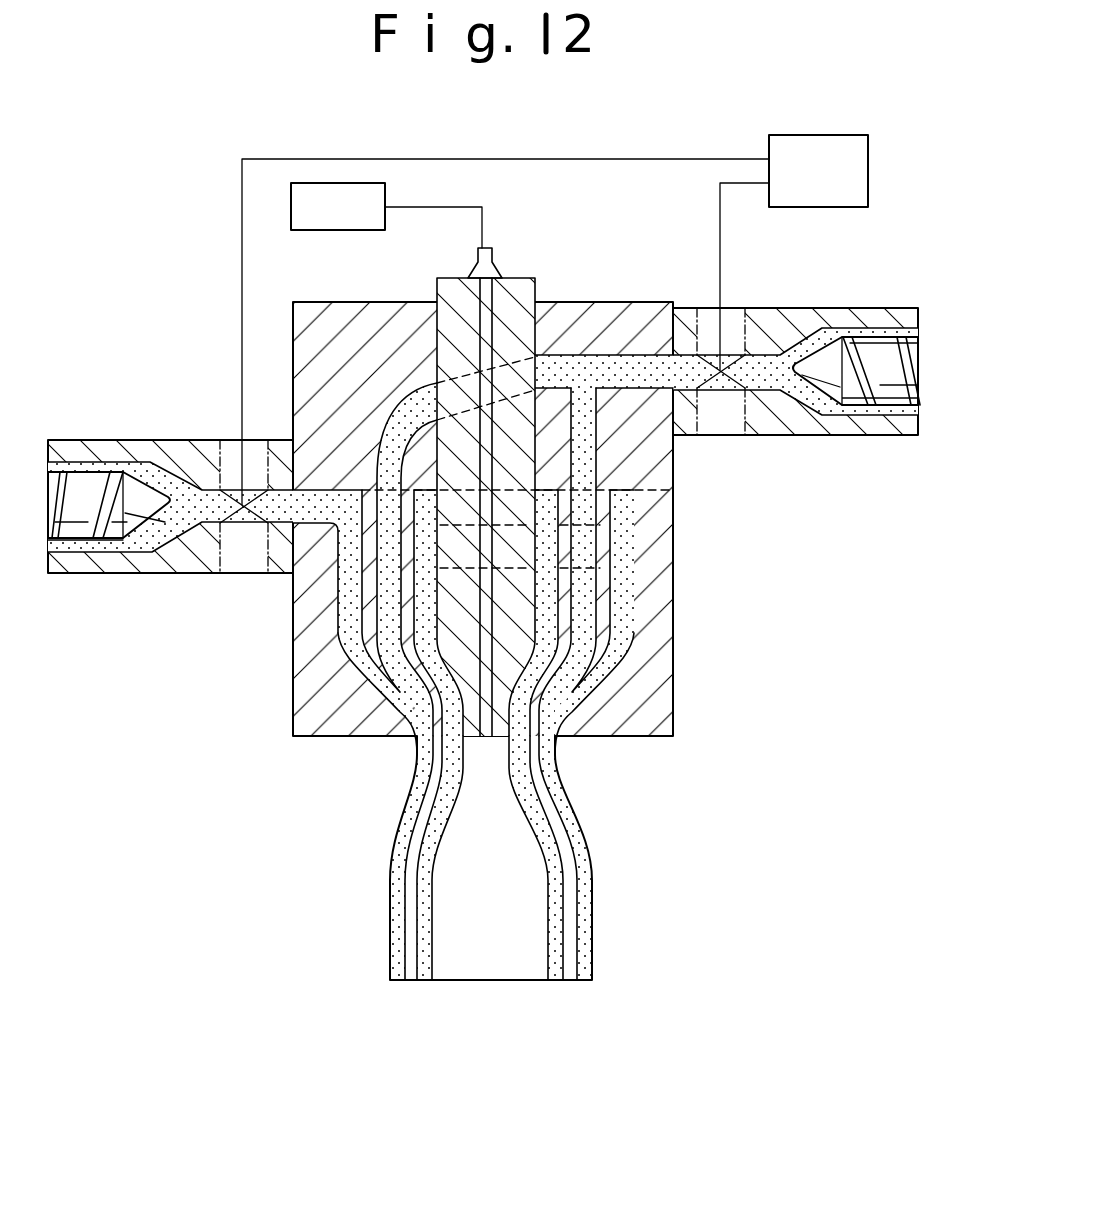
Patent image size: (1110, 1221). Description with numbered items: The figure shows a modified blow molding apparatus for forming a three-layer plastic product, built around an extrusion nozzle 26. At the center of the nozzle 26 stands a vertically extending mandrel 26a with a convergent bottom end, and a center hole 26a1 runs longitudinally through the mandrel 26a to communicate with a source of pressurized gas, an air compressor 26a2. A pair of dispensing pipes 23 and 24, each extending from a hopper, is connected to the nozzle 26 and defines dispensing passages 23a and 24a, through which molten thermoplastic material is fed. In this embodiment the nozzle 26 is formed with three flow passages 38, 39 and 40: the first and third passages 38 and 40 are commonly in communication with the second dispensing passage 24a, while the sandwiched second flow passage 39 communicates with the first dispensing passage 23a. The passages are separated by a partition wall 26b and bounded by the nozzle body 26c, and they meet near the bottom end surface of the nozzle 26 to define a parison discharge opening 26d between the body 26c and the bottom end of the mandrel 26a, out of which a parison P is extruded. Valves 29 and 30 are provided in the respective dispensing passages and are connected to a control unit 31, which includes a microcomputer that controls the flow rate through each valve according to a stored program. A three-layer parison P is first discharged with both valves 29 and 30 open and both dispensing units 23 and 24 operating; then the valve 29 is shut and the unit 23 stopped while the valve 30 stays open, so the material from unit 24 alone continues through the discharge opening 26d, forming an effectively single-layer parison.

The extrusion nozzle 26 is at (657, 738).
The mandrel 26a is at (440, 295).
The center hole 26a1 is at (483, 318).
The air compressor 26a2 is at (318, 218).
The partition wall 26b is at (567, 623).
The nozzle body 26c is at (310, 712).
The parison discharge opening 26d is at (443, 740).
The dispensing pipe 24 is at (90, 575).
The dispensing passage 24a is at (138, 458).
The dispensing pipe 23 is at (830, 447).
The dispensing passage 23a is at (780, 375).
The valve 29 is at (730, 317).
The valve 30 is at (228, 440).
The control unit 31 is at (838, 192).
The first flow passage 38 is at (402, 672).
The second flow passage 39 is at (378, 640).
The third flow passage 40 is at (340, 617).
The parison P is at (600, 960).